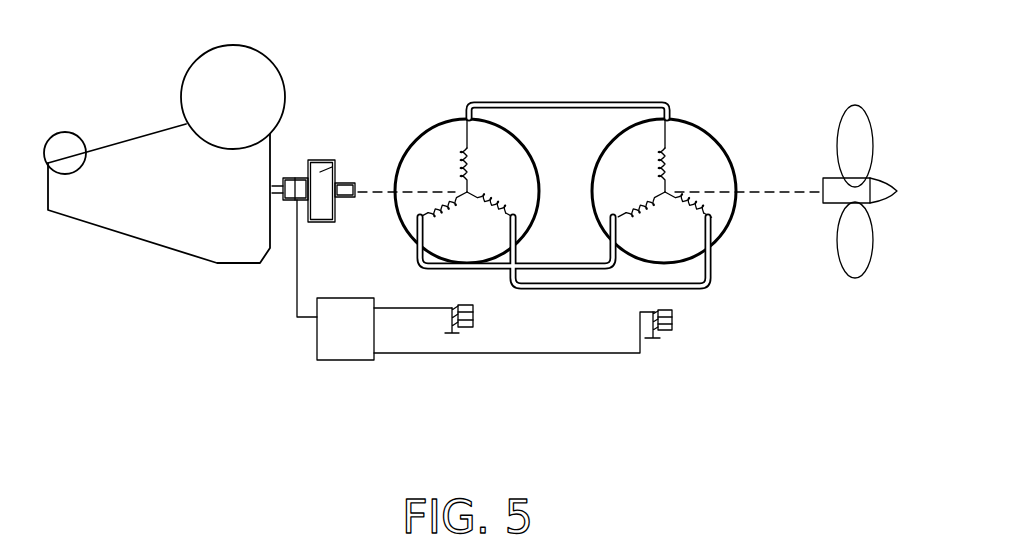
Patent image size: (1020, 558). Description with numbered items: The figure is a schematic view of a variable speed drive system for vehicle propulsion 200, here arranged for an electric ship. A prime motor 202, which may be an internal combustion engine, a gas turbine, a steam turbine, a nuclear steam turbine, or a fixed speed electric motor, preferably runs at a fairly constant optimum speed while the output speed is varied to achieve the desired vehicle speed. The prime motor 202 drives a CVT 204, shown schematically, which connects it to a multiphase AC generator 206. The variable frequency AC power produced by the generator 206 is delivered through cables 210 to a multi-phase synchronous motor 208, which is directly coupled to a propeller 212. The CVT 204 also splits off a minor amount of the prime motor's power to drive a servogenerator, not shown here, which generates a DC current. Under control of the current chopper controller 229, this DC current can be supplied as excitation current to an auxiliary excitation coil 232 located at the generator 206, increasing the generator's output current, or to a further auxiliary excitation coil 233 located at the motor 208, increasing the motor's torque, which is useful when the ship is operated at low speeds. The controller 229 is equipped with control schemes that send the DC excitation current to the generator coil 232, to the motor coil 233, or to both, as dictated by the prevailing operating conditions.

The variable speed drive system for vehicle propulsion 200 is at (155, 343).
The prime motor 202 is at (173, 208).
The CVT 204 is at (338, 158).
The multiphase AC generator 206 is at (443, 118).
The multi-phase synchronous motor 208 is at (708, 135).
The cables 210 is at (618, 103).
The propeller 212 is at (857, 278).
The current chopper controller 229 is at (350, 330).
The auxiliary excitation coil 232 is at (467, 328).
The auxiliary excitation coil 233 is at (667, 332).